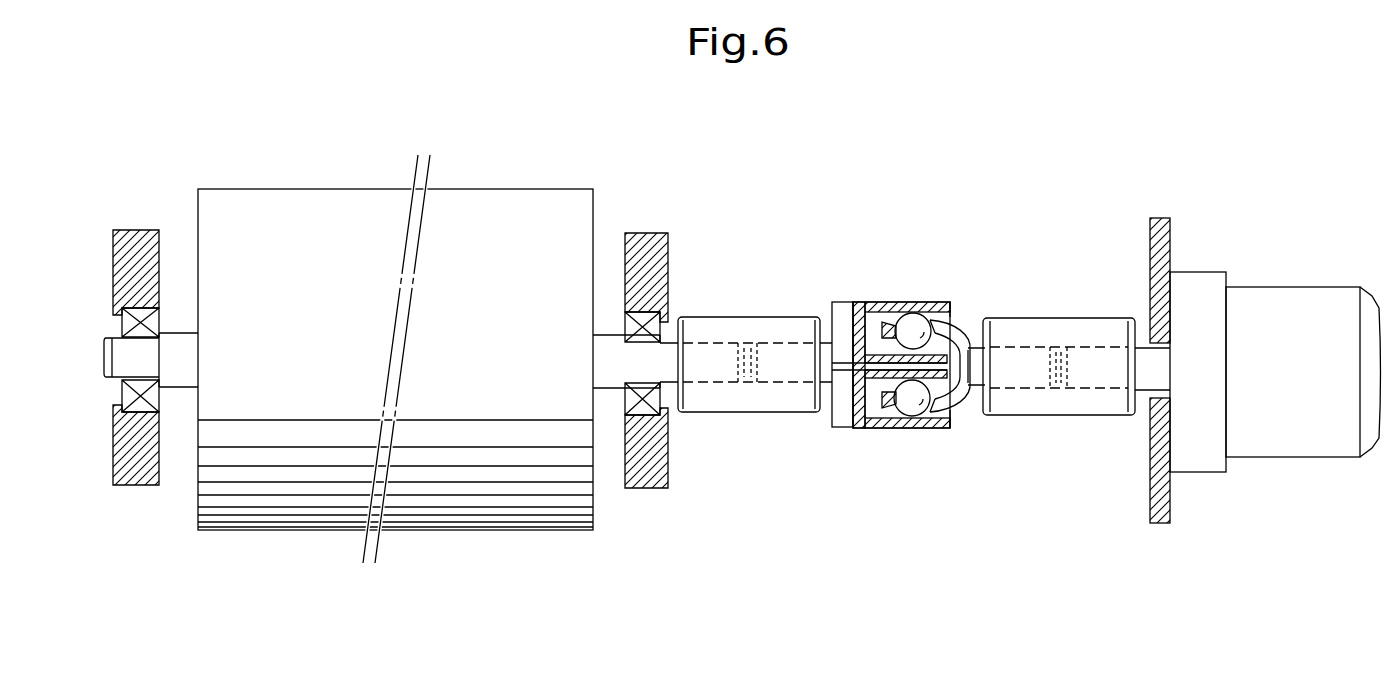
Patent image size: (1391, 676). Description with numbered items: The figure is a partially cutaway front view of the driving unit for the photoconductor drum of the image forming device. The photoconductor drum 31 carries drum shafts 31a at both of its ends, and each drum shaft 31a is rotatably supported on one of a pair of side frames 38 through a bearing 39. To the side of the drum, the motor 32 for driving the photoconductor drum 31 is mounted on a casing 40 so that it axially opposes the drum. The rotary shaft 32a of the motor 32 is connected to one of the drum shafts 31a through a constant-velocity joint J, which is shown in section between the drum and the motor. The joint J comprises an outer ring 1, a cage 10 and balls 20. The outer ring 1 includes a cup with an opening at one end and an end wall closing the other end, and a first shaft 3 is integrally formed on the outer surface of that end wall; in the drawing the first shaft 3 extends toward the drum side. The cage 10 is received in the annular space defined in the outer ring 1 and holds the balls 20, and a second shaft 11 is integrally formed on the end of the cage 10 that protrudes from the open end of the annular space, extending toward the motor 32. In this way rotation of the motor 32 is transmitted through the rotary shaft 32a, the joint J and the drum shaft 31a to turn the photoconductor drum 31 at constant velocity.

The outer ring 1 is at (851, 300).
The constant-velocity joint J is at (889, 300).
The first shaft 3 is at (802, 373).
The cage 10 is at (963, 326).
The second shaft 11 is at (1017, 355).
The balls 20 is at (913, 320).
The photoconductor drum 31 is at (338, 189).
The drum shafts 31a is at (122, 357).
The motor 32 is at (1283, 296).
The rotary shaft 32a is at (1142, 365).
The side frames 38 is at (141, 234).
The bearing 39 is at (124, 393).
The casing 40 is at (1157, 228).